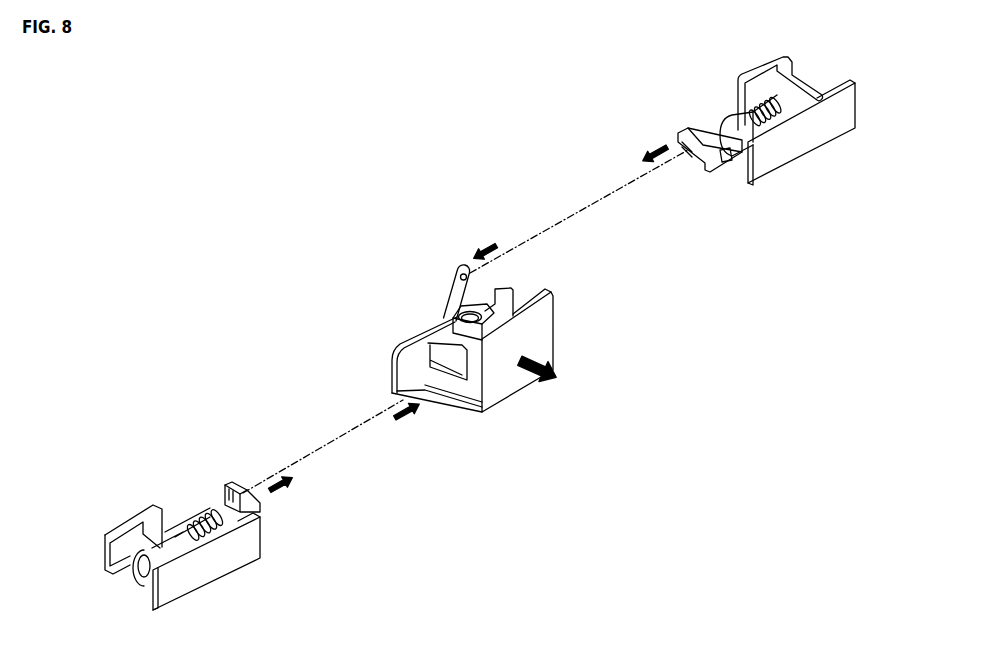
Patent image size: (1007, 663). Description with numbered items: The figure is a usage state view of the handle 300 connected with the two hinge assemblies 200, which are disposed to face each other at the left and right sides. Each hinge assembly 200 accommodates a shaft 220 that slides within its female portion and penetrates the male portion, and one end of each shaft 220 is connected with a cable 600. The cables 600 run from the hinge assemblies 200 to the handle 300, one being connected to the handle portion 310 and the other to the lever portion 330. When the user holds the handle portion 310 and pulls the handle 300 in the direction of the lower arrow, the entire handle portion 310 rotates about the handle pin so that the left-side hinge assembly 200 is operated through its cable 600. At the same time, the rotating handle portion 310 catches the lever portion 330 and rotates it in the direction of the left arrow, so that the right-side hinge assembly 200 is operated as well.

The hinge assembly 200 is at (786, 150).
The shaft 220 is at (754, 110).
The handle 300 is at (473, 328).
The handle portion 310 is at (544, 333).
The lever portion 330 is at (452, 284).
The cable 600 is at (577, 213).